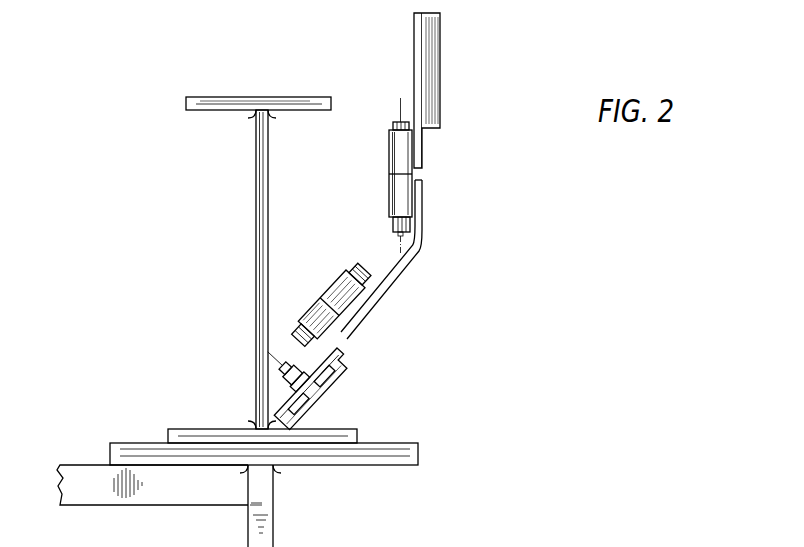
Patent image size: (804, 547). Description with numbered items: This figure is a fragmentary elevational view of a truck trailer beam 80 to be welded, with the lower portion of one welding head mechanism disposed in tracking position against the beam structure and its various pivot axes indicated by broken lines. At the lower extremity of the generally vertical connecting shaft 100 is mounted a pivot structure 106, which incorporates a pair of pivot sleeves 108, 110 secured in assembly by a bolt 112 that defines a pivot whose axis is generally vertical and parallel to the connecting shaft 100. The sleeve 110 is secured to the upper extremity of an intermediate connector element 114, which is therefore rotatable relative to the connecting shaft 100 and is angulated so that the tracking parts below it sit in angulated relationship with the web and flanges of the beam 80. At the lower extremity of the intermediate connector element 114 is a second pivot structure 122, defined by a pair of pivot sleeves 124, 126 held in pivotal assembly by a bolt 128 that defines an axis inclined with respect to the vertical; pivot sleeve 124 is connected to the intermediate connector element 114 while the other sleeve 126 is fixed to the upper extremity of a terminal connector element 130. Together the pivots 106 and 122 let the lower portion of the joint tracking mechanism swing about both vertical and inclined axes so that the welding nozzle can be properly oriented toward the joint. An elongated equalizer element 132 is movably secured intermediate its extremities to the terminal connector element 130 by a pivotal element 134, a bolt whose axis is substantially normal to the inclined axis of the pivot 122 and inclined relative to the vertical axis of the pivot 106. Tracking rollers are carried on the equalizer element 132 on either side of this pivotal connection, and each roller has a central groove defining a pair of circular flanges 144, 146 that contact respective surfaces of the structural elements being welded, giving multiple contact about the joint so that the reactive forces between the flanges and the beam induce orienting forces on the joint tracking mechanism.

The truck trailer beam 80 is at (247, 102).
The connecting shaft 100 is at (430, 58).
The pivot structure 106 is at (359, 135).
The pivot sleeve 108 is at (392, 163).
The pivot sleeve 110 is at (392, 197).
The bolt 112 is at (395, 120).
The intermediate connector element 114 is at (422, 203).
The second pivot structure 122 is at (328, 270).
The pivot sleeve 124 is at (360, 303).
The pivot sleeve 126 is at (342, 340).
The bolt 128 is at (370, 283).
The terminal connector element 130 is at (290, 354).
The equalizer element 132 is at (280, 400).
The pivotal element 134 is at (278, 358).
The circular flange 144 is at (350, 360).
The circular flange 146 is at (340, 403).